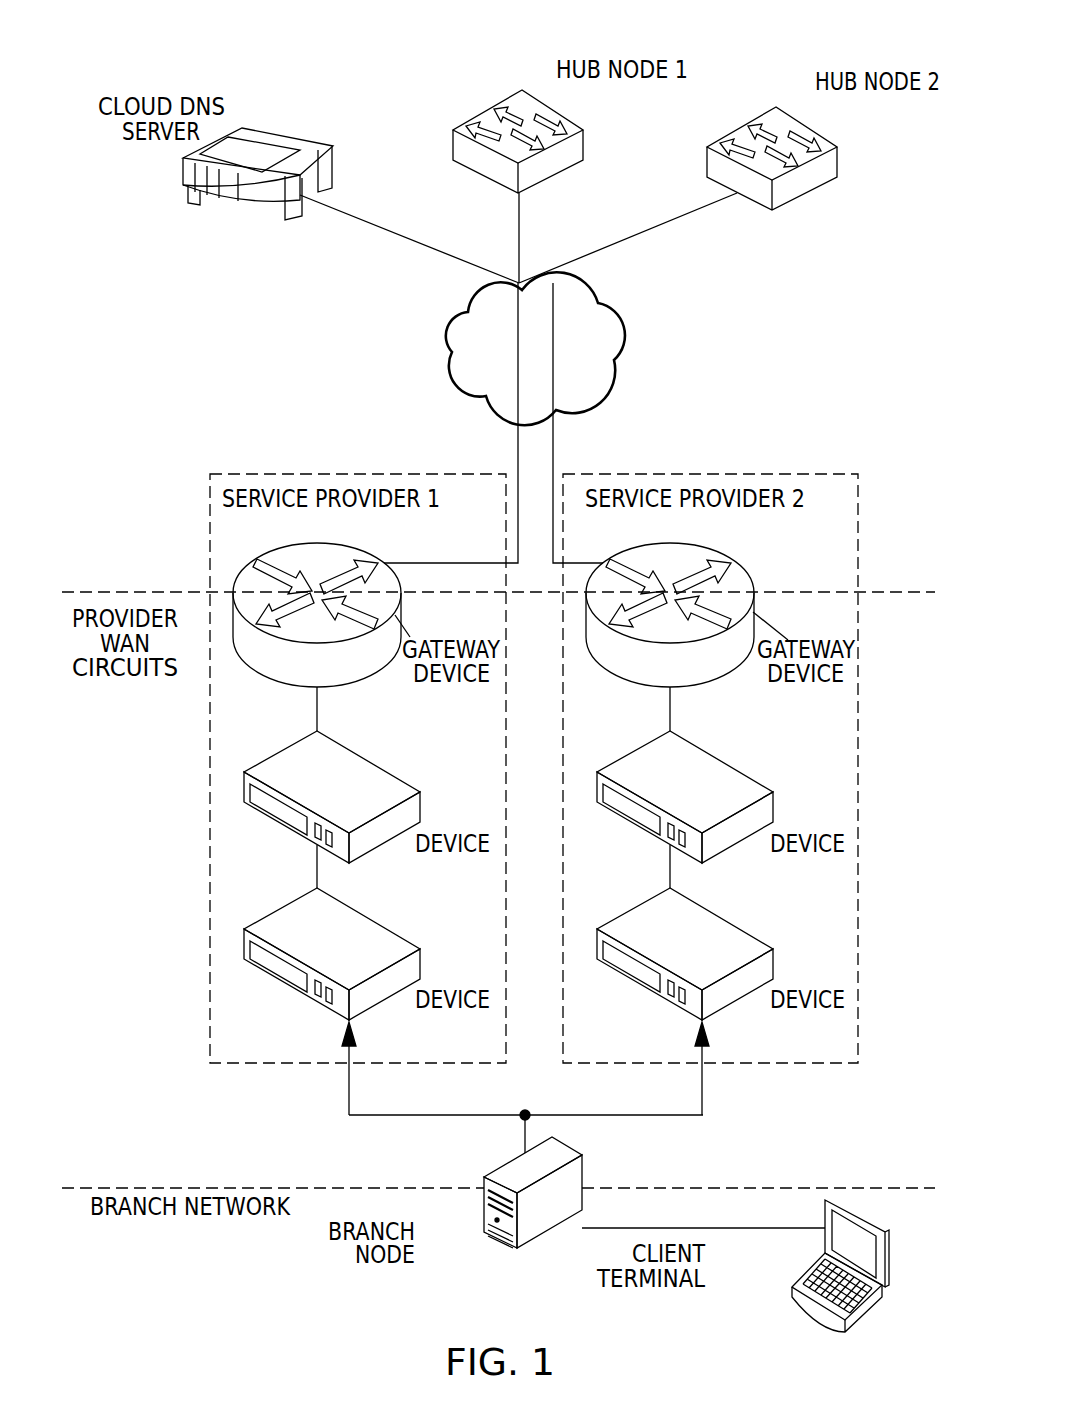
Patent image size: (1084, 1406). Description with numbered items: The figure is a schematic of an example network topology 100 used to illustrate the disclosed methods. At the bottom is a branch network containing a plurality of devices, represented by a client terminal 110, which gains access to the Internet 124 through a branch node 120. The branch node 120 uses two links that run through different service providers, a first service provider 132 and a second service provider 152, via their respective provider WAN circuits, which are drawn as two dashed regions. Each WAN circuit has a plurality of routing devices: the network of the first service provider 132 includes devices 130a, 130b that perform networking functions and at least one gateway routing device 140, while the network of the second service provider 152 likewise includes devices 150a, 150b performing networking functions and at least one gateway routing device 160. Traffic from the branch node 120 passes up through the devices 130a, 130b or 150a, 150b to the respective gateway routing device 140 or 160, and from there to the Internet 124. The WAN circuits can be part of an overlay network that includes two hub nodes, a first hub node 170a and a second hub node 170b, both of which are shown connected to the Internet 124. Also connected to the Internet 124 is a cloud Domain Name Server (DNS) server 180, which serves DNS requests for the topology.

The network system 100 is at (814, 36).
The client terminal 110 is at (792, 1287).
The branch node 120 is at (490, 1233).
The Internet 124 is at (453, 362).
The device 130a is at (281, 906).
The device 130b is at (372, 758).
The Service Provider 1 132 is at (210, 767).
The gateway routing device 140 is at (258, 670).
The device 150a is at (635, 906).
The device 150b is at (725, 758).
The Service Provider 2 152 is at (858, 770).
The gateway routing device 160 is at (612, 670).
The Hub Node 1 170a is at (555, 106).
The Hub Node 2 170b is at (808, 127).
The cloud Domain Name Server (DNS) server 180 is at (250, 205).